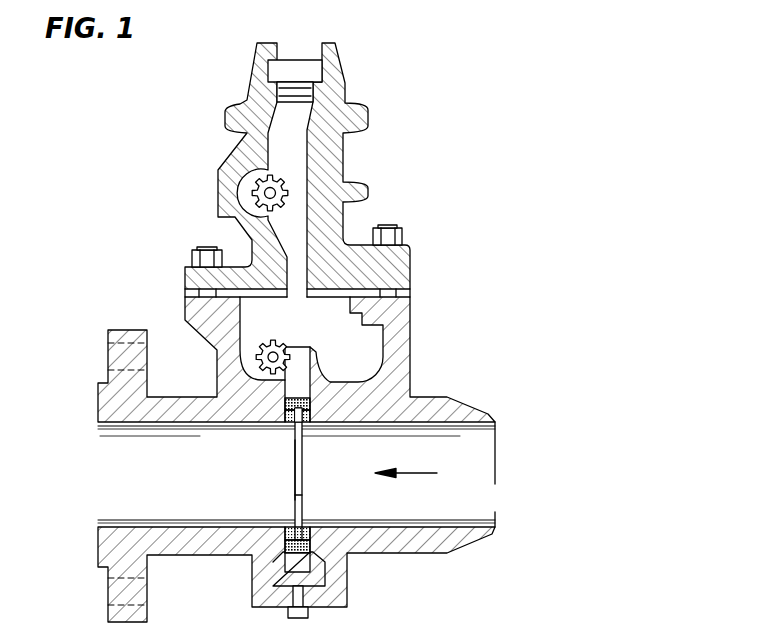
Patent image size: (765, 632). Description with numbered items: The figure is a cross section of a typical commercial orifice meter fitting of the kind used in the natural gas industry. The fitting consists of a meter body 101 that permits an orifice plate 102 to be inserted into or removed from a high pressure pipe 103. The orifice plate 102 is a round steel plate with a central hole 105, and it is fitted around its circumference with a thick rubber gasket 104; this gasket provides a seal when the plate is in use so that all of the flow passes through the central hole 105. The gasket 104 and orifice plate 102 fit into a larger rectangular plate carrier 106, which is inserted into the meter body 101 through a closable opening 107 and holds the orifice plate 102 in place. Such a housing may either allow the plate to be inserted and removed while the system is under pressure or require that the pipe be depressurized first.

The meter body 101 is at (390, 378).
The orifice plate 102 is at (303, 512).
The high pressure pipe 103 is at (478, 466).
The rubber gasket 104 is at (304, 565).
The central hole 105 is at (294, 472).
The plate carrier 106 is at (309, 573).
The closable opening 107 is at (296, 48).